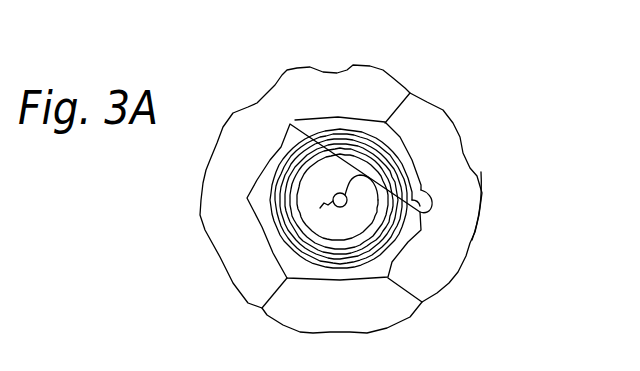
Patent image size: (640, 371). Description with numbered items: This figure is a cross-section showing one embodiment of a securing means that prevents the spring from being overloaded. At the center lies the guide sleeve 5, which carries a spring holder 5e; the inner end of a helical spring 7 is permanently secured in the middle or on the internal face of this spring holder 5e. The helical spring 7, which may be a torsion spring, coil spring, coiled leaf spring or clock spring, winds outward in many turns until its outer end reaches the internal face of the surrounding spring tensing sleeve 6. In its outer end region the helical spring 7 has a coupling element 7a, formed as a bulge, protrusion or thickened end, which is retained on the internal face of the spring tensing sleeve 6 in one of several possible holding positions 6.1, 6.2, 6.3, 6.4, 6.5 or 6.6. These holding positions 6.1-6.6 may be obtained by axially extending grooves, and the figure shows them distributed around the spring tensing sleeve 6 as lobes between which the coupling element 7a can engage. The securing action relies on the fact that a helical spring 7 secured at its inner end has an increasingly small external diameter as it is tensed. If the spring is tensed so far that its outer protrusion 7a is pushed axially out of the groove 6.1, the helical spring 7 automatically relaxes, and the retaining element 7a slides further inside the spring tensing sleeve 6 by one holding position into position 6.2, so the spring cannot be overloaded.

The guide sleeve 5 is at (330, 181).
The spring holder 5e is at (341, 193).
The spring tensing sleeve 6 is at (448, 155).
The holding position 6.1 is at (432, 205).
The holding position 6.2 is at (408, 92).
The holding position 6.3 is at (295, 120).
The holding position 6.4 is at (247, 197).
The holding position 6.5 is at (262, 308).
The holding position 6.6 is at (422, 302).
The helical spring 7 is at (417, 233).
The coupling element 7a is at (432, 203).